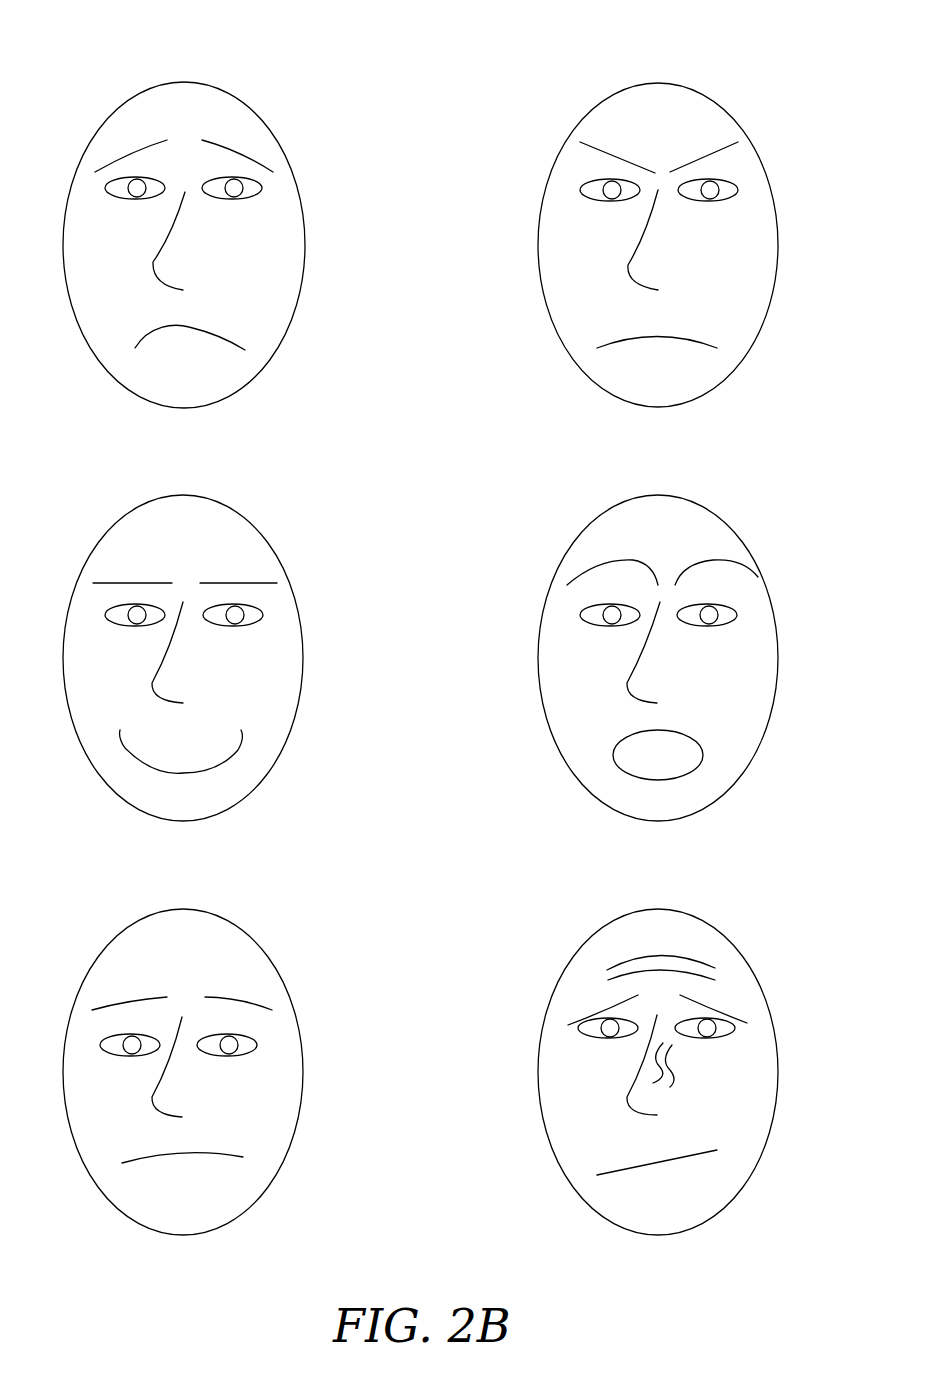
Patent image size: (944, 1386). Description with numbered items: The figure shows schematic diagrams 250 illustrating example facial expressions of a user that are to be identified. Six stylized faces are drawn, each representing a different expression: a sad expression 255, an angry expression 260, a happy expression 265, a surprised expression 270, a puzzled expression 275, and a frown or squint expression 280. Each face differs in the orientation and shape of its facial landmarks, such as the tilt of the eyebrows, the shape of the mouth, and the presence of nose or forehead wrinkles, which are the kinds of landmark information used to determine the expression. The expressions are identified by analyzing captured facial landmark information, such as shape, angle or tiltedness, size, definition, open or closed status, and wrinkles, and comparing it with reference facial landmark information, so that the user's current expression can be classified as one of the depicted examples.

The schematic diagrams 250 is at (528, 76).
The sad expression 255 is at (211, 238).
The angry expression 260 is at (685, 235).
The happy expression 265 is at (211, 652).
The surprised expression 270 is at (685, 650).
The puzzled expression 275 is at (211, 1064).
The frown or squint expression 280 is at (684, 1063).